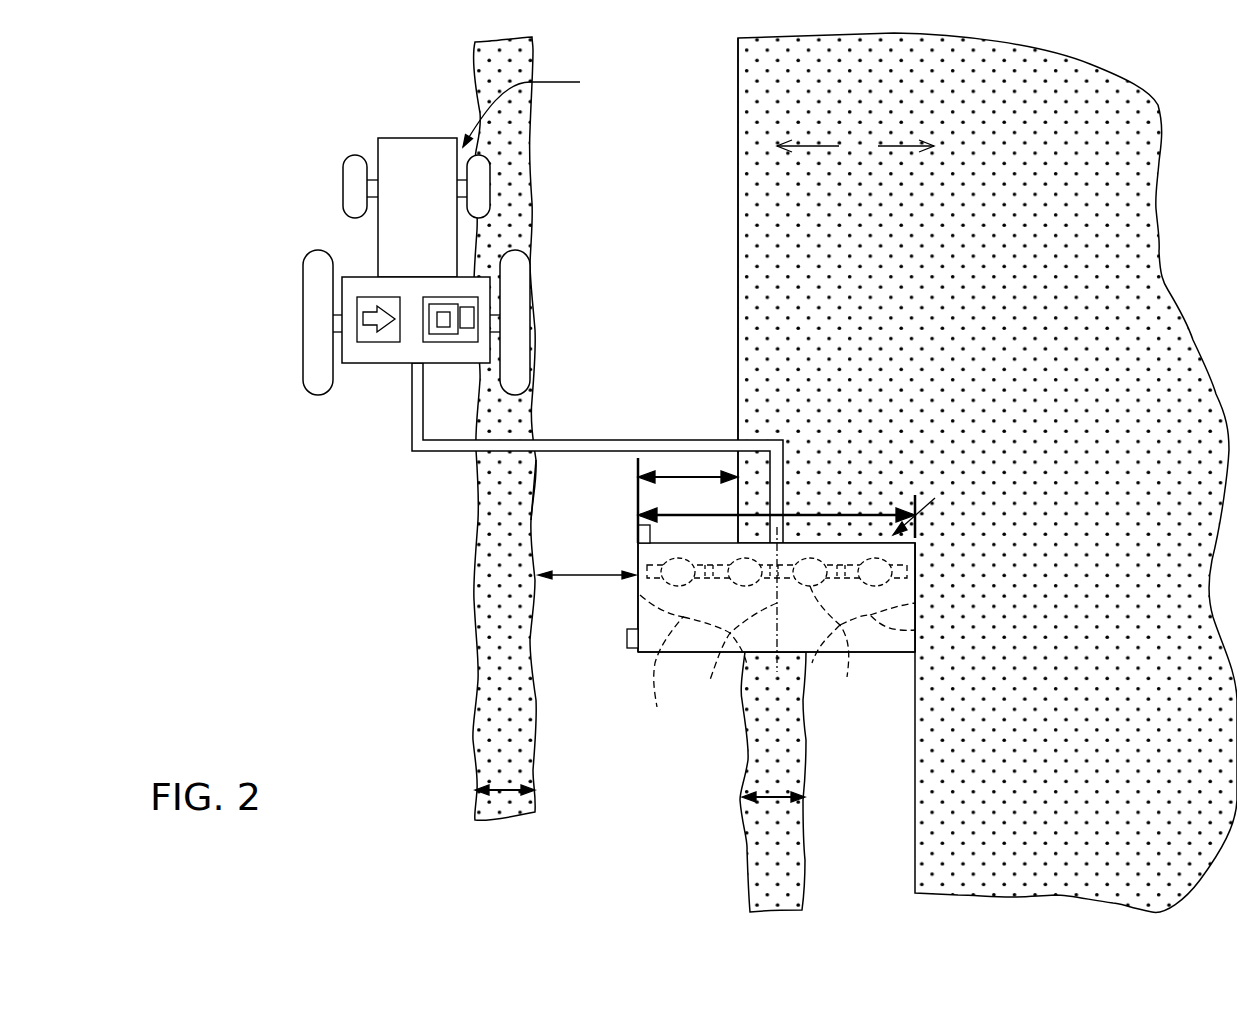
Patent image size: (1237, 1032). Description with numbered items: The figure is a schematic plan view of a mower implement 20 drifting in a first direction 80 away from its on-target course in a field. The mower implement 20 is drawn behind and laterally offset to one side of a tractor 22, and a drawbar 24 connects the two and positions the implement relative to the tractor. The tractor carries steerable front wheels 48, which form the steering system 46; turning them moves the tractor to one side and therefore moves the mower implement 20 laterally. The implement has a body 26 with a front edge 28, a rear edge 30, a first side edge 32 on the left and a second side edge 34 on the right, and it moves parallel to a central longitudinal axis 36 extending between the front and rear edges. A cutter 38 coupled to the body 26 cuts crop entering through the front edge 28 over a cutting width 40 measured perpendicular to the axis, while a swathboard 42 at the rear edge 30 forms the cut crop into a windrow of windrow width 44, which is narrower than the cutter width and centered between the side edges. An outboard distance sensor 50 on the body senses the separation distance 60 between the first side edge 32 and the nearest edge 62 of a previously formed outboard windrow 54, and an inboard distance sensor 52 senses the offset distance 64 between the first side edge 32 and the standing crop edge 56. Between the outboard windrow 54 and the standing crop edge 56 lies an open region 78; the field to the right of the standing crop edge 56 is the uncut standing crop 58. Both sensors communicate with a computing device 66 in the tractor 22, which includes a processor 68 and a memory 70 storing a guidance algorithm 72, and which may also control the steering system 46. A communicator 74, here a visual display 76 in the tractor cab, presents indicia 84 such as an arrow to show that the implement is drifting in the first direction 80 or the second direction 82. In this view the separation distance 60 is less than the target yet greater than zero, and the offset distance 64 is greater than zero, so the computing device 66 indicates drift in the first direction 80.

The mower implement 20 is at (917, 508).
The tractor 22 is at (378, 242).
The drawbar 24 is at (560, 440).
The body 26 is at (917, 568).
The front edge 28 is at (812, 542).
The rear edge 30 is at (880, 653).
The first side edge 32 is at (638, 612).
The second side edge 34 is at (917, 609).
The central longitudinal axis 36 is at (730, 657).
The cutter 38 is at (837, 648).
The cutting width 40 is at (870, 541).
The swathboard 42 is at (985, 628).
The windrow width 44 is at (492, 792).
The steering system 46 is at (541, 108).
The steerable front wheels 48 is at (353, 167).
The outboard distance sensor 50 is at (633, 641).
The inboard distance sensor 52 is at (638, 533).
The outboard windrow 54 is at (500, 667).
The standing crop edge 56 is at (738, 315).
The planted area 58 is at (936, 310).
The separation distance 60 is at (638, 598).
The nearest edge 62 is at (537, 537).
The offset distance 64 is at (700, 477).
The computing device 66 is at (467, 295).
The processor 68 is at (478, 313).
The memory 70 is at (450, 335).
The guidance algorithm 72 is at (438, 312).
The communicator 74 is at (363, 288).
The visual display 76 is at (346, 337).
The open region 78 is at (658, 199).
The first direction 80 is at (812, 146).
The second direction 82 is at (903, 146).
The indicia 84 is at (357, 317).